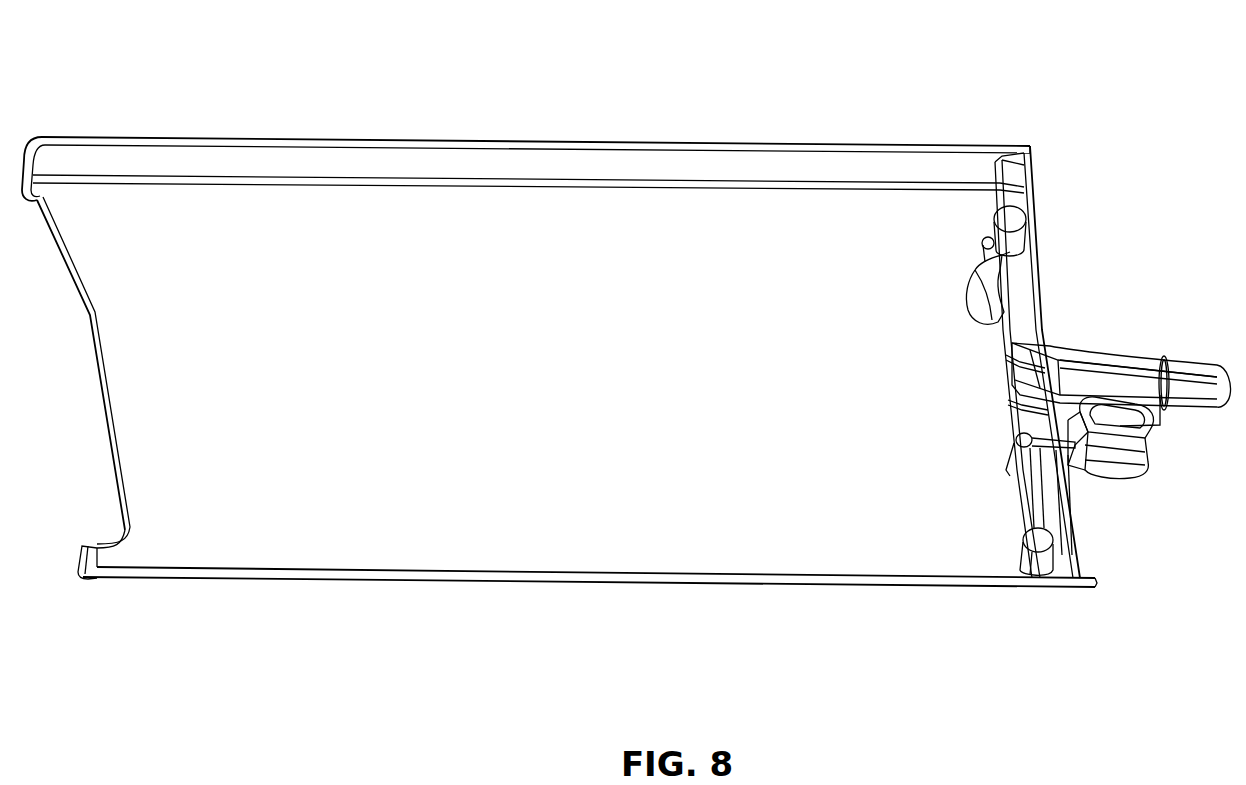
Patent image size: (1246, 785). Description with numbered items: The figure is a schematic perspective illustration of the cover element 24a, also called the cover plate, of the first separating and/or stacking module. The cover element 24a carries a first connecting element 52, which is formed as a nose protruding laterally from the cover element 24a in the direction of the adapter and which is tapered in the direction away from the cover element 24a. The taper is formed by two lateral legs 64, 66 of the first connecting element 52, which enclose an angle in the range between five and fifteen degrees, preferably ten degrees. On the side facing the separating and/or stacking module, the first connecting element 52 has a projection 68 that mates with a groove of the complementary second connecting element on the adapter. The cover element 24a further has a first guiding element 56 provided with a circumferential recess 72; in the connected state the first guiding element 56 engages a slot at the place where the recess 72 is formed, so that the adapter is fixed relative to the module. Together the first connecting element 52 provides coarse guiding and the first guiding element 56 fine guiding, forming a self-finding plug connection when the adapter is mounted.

The cover element 24a is at (404, 112).
The first connecting element 52 is at (1106, 380).
The first guiding element 56 is at (1113, 468).
The lateral leg 64 is at (1160, 424).
The lateral leg 66 is at (1130, 350).
The projection 68 is at (1185, 355).
The circumferential recess 72 is at (1135, 452).